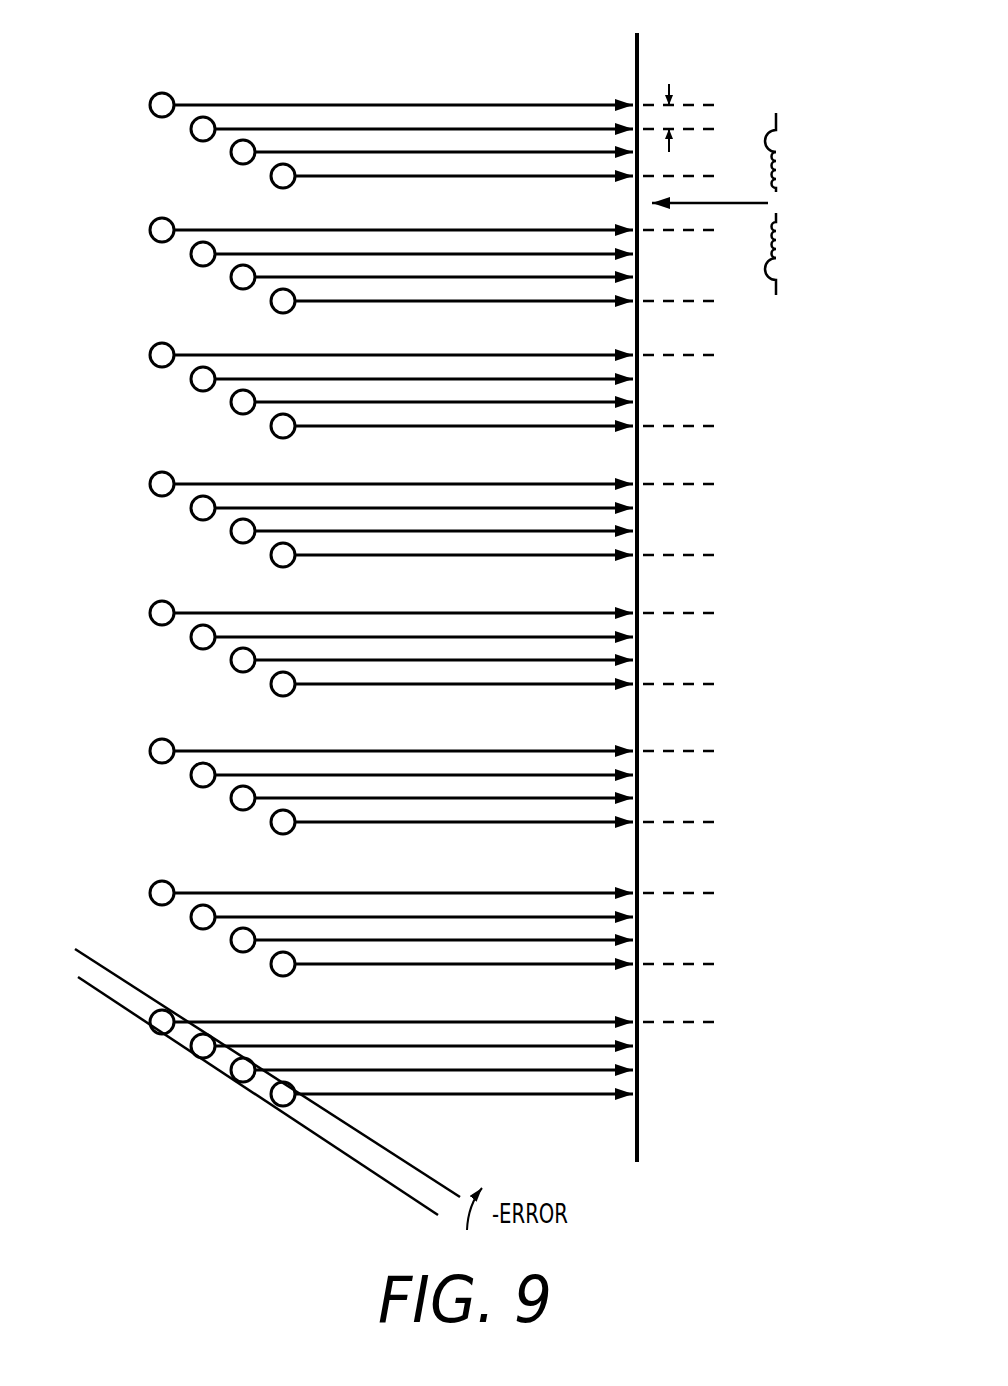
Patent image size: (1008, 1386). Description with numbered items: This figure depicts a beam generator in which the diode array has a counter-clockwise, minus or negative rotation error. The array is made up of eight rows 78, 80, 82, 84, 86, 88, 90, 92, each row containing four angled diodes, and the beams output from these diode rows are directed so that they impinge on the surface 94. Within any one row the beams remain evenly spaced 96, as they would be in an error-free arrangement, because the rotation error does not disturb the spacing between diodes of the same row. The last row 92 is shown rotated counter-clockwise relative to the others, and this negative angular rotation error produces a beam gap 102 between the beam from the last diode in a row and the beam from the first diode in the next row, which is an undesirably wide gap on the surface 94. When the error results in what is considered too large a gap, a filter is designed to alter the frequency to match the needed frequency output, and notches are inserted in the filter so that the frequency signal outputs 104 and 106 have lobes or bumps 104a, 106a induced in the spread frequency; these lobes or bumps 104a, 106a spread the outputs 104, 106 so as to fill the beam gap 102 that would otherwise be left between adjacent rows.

The diode row 78 is at (142, 90).
The diode row 80 is at (143, 227).
The diode row 82 is at (143, 353).
The diode row 84 is at (143, 492).
The diode row 86 is at (143, 623).
The diode row 88 is at (143, 763).
The diode row 90 is at (140, 912).
The diode row 92 is at (145, 1040).
The surface 94 is at (641, 63).
The beam spacing within a row 96 is at (670, 90).
The beam gap 102 is at (650, 216).
The frequency signal output 104 is at (781, 143).
The lobe or bump 104a is at (784, 180).
The frequency signal output 106 is at (783, 238).
The lobe or bump 106a is at (779, 266).